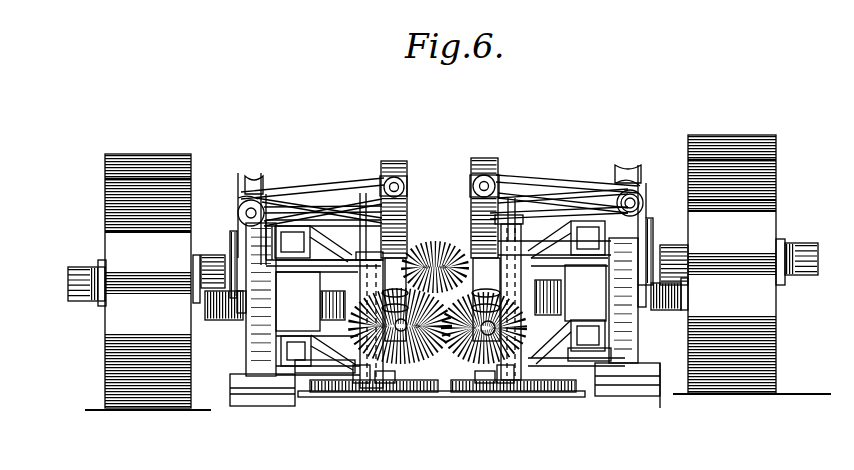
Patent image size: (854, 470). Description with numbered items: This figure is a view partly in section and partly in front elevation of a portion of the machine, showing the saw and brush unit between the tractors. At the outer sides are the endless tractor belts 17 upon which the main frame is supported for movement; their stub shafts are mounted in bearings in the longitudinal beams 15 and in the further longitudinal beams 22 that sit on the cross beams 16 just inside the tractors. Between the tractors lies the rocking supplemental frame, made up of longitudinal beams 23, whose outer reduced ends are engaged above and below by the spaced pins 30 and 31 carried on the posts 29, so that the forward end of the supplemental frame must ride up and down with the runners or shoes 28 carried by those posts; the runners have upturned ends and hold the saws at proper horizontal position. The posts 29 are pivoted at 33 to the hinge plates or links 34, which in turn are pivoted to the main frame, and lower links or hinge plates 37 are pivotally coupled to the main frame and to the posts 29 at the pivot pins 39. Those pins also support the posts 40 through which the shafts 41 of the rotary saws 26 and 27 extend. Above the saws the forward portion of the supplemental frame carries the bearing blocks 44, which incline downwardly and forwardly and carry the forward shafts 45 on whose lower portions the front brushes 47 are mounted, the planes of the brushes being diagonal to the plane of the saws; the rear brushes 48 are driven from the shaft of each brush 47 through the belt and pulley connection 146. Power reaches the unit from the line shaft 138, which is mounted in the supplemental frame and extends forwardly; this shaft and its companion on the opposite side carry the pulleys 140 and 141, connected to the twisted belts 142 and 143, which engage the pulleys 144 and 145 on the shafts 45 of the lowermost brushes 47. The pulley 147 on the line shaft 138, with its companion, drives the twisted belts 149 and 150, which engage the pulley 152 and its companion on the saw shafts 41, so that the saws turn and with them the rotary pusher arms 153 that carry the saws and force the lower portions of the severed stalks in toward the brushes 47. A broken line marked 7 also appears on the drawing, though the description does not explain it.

The section line 7 is at (282, 196).
The longitudinal beams 15 is at (65, 293).
The cross beams 16 is at (680, 295).
The endless tractor belts 17 is at (97, 328).
The longitudinal beams 22 is at (222, 248).
The longitudinal beams 23 is at (228, 175).
The rotary saw 26 is at (413, 384).
The rotary saw 27 is at (527, 372).
The runners or shoes 28 is at (652, 390).
The posts 29 is at (238, 352).
The pin 30 is at (215, 295).
The pin 31 is at (233, 305).
The pivot 33 is at (442, 297).
The hinge plates or links 34 is at (330, 238).
The lower links or hinge plates 37 is at (273, 398).
The pivot pins 39 is at (305, 389).
The posts 40 is at (353, 375).
The shafts 41 is at (325, 347).
The bearing blocks 44 is at (390, 153).
The forward shaft 45 is at (445, 360).
The front brushes 47 is at (318, 299).
The rear brushes 48 is at (553, 289).
The shaft 138 is at (627, 197).
The pulley 140 is at (632, 178).
The pulley 141 is at (232, 190).
The twisted belt 142 is at (587, 170).
The twisted belt 143 is at (317, 182).
The pulley 144 is at (485, 165).
The pulley 145 is at (395, 172).
The belt and pulley connection 146 is at (436, 250).
The pulley 147 is at (230, 205).
The twisted belt 149 is at (548, 190).
The twisted belt 150 is at (285, 196).
The pulley 152 is at (357, 175).
The rotary pusher arms 153 is at (447, 389).